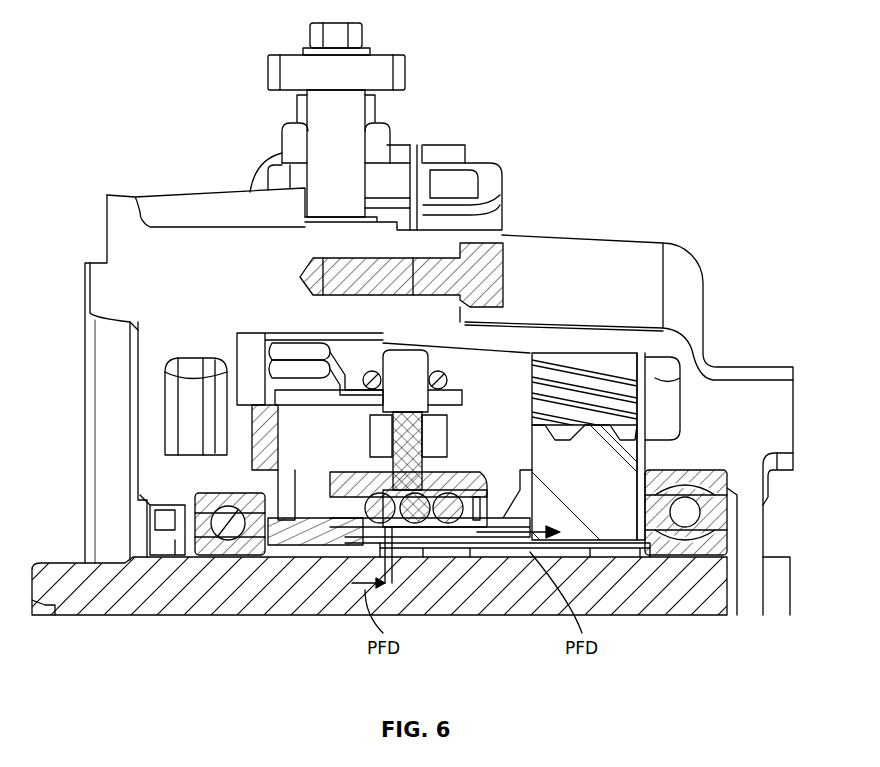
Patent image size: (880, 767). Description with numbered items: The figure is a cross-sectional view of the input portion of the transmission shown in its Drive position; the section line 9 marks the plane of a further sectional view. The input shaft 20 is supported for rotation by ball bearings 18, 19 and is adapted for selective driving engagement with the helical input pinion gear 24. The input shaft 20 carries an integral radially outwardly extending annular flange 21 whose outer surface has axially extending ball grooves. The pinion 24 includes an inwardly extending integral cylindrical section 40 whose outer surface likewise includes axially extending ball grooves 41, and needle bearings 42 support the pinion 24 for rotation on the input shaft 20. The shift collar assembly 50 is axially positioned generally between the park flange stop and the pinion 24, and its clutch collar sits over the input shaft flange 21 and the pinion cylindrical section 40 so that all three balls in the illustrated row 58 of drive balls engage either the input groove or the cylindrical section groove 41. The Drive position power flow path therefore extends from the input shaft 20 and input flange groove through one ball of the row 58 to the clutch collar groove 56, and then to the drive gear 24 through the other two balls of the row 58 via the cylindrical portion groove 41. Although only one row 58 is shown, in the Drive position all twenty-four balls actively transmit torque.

The section line 9- 9 is at (423, 692).
The ball bearing 18 is at (215, 500).
The ball bearing 19 is at (715, 478).
The input shaft 20 is at (163, 598).
The annular flange 21 is at (355, 568).
The helical input pinion gear 24 is at (628, 468).
The cylindrical section 40 is at (490, 550).
The ball grooves 41 is at (503, 518).
The needle bearings 42 is at (440, 548).
The shift collar assembly 50 is at (475, 465).
The clutch collar groove 56 is at (355, 495).
The row of drive balls 58 is at (425, 495).